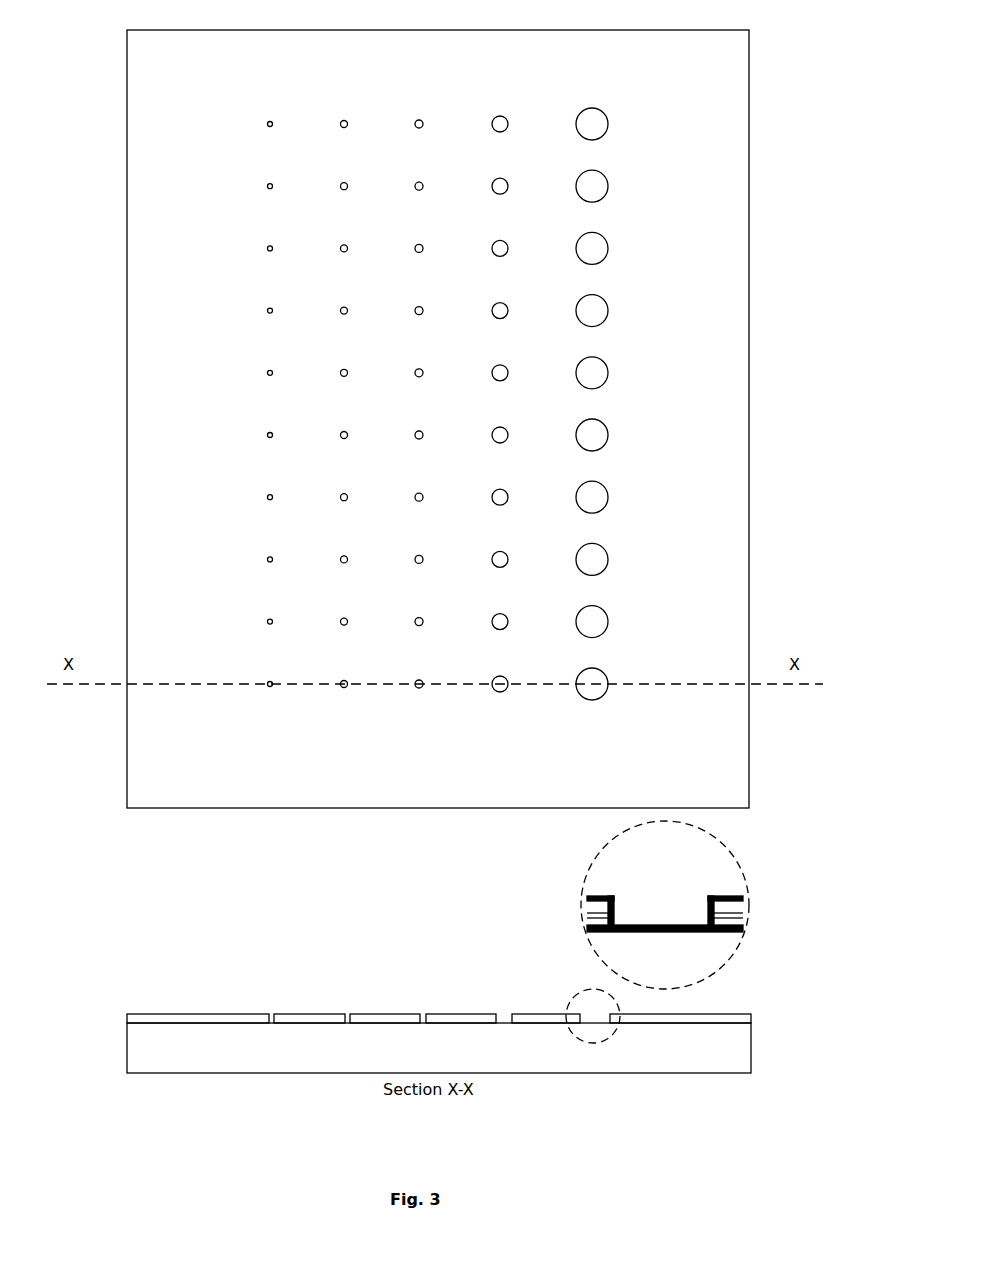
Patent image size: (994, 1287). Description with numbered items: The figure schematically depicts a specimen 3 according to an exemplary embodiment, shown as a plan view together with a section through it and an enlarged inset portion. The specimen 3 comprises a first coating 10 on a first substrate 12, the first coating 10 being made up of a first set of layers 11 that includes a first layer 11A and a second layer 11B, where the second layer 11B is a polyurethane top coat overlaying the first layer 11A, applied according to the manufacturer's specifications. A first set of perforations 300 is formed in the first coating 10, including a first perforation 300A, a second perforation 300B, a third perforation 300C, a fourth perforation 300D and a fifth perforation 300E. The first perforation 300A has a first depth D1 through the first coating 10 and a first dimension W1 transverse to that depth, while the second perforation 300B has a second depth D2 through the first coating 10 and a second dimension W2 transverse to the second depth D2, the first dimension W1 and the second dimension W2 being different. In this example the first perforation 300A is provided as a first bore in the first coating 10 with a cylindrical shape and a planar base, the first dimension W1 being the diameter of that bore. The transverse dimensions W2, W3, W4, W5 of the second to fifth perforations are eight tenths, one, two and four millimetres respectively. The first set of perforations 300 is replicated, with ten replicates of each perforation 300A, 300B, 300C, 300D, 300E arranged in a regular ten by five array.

The first coating 10 is at (739, 767).
The first substrate 12 is at (740, 1069).
The first set of perforations 300 is at (373, 509).
The first perforation 300A is at (268, 711).
The second perforation 300B is at (342, 711).
The third perforation 300C is at (417, 711).
The fourth perforation 300D is at (494, 711).
The fifth perforation 300E is at (577, 711).
The first dimension W1 is at (298, 622).
The second dimension W2 is at (375, 559).
The third dimension W3 is at (450, 622).
The fourth dimension W4 is at (533, 559).
The fifth dimension W5 is at (633, 622).
The first depth D1 is at (272, 985).
The second depth D2 is at (348, 985).
The specimen 3 is at (778, 856).
The first set of layers 11 is at (661, 914).
The first layer 11A is at (588, 921).
The second layer 11B is at (588, 907).